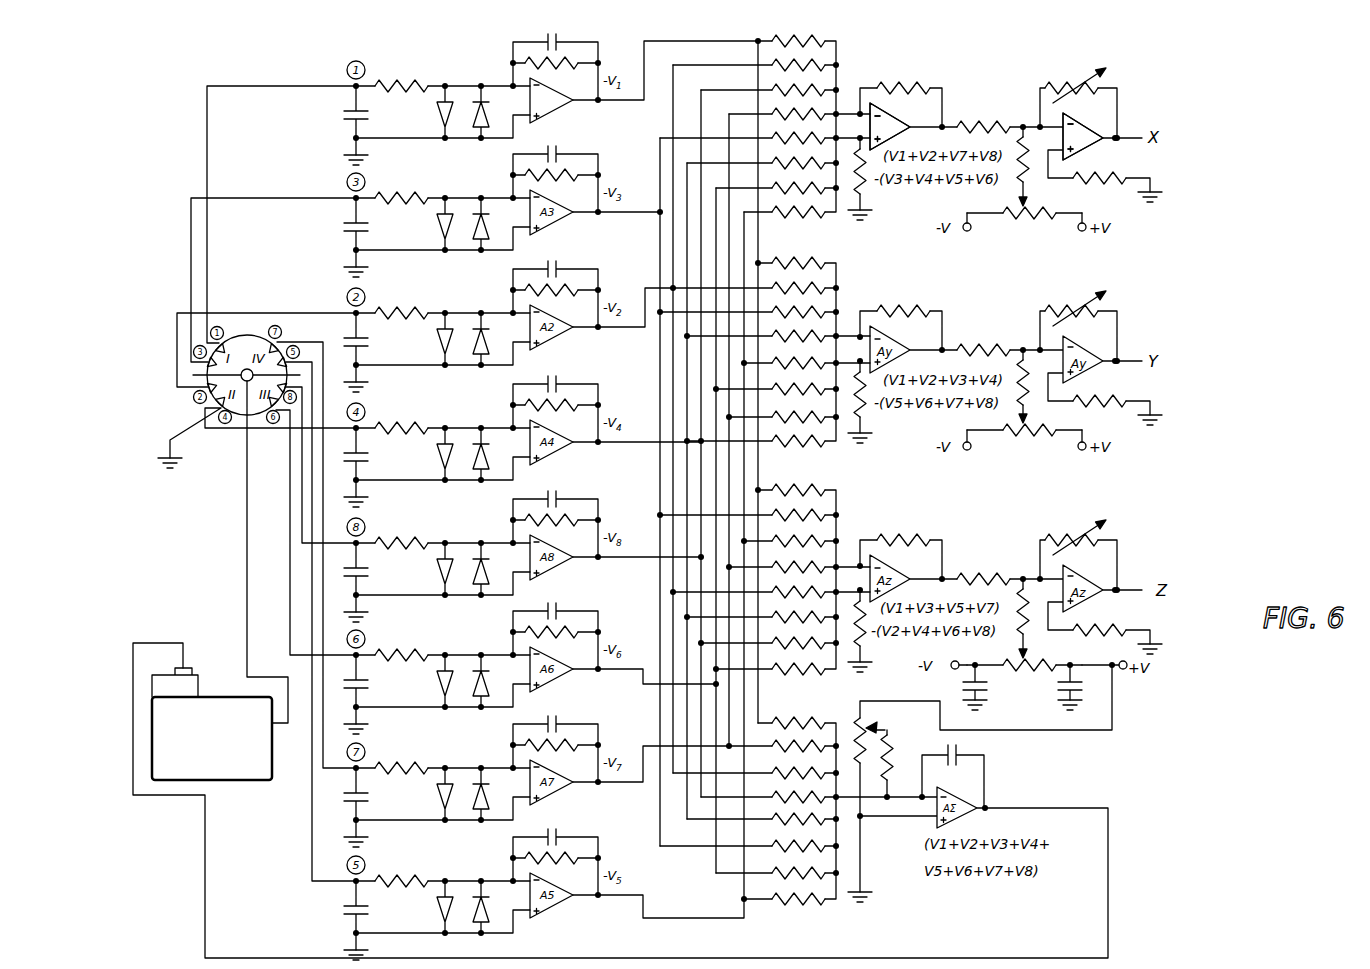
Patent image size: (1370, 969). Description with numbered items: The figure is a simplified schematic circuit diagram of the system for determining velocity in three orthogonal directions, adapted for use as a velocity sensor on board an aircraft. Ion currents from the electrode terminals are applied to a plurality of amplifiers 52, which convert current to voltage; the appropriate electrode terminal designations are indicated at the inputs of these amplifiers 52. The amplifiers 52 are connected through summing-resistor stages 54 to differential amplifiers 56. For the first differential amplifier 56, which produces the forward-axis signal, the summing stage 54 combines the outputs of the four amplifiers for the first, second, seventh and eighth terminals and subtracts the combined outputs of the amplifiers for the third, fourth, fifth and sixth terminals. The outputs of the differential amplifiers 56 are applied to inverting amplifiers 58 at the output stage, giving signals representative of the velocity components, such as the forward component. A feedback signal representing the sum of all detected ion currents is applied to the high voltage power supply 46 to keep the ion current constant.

The high voltage power supply 46 is at (216, 697).
The amplifier 52 is at (553, 106).
The summing-resistor stage 54 is at (826, 40).
The differential amplifier 56 is at (891, 112).
The inverting amplifier 58 is at (1073, 120).